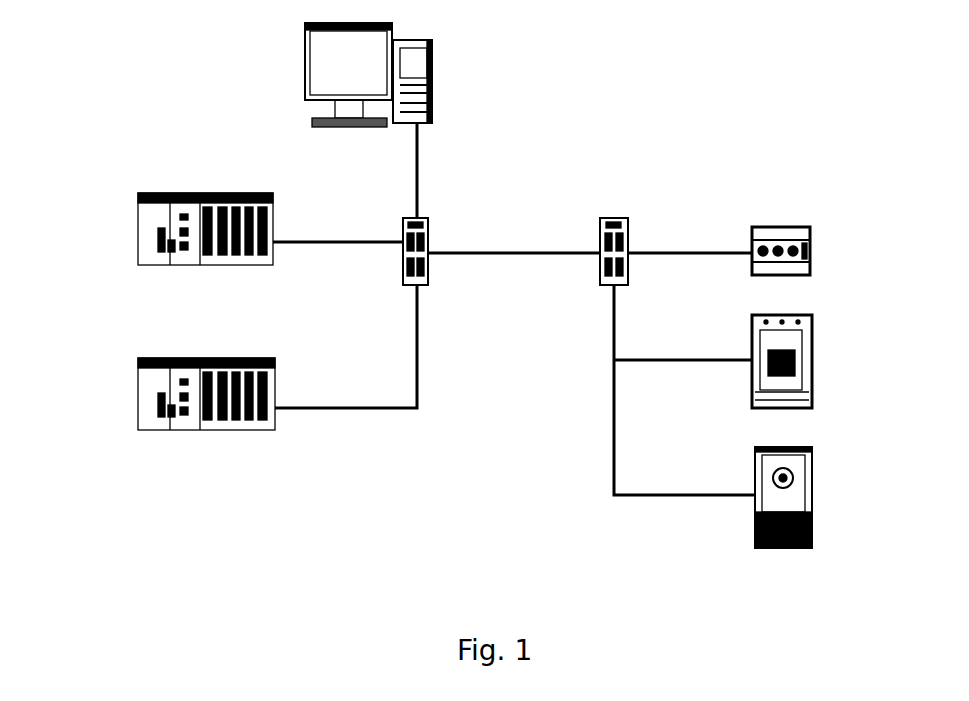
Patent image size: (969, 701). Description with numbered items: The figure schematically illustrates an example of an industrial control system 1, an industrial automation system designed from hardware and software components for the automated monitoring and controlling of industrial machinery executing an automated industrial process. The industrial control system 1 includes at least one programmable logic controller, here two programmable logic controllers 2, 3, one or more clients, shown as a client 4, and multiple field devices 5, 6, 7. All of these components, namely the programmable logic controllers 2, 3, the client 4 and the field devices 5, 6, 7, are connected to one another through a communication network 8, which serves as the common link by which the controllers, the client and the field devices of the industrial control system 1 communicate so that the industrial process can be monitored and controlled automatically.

The industrial control system 1 is at (73, 44).
The programmable logic controller 2 is at (160, 237).
The programmable logic controller 3 is at (160, 395).
The client 4 is at (433, 58).
The field device 5 is at (820, 258).
The field device 6 is at (820, 350).
The field device 7 is at (820, 480).
The communication network 8 is at (527, 256).